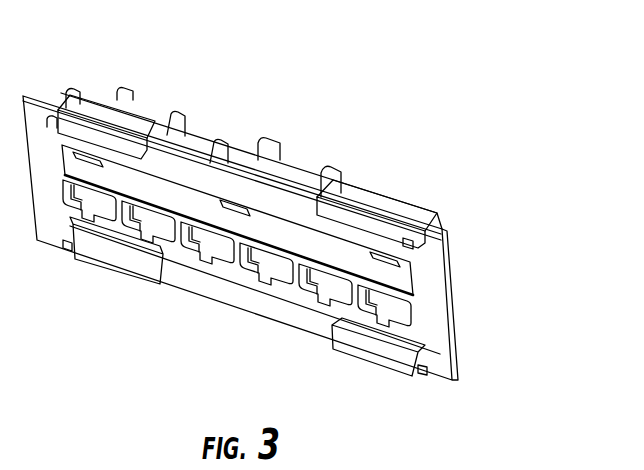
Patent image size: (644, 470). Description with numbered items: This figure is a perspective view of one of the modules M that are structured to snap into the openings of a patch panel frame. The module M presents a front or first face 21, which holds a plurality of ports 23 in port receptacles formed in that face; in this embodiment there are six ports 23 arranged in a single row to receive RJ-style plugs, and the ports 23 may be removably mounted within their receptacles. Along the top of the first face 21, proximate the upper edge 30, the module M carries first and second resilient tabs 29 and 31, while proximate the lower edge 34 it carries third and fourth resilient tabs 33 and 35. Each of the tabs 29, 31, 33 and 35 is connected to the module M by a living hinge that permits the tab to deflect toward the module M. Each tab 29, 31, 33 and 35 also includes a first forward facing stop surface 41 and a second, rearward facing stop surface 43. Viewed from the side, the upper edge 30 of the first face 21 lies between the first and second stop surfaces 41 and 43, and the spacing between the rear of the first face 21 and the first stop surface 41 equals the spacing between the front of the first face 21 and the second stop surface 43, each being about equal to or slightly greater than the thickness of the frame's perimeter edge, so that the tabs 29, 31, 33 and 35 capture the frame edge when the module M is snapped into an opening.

The first face 21 is at (432, 290).
The ports 23 is at (278, 268).
The first resilient tab 29 is at (100, 81).
The upper edge 30 is at (200, 132).
The second resilient tab 31 is at (363, 175).
The third resilient tab 33 is at (106, 272).
The lower edge 34 is at (263, 300).
The fourth resilient tab 35 is at (394, 380).
The first forward facing stop surface 41 is at (120, 130).
The second rearward facing stop surface 43 is at (98, 135).
The module M is at (530, 204).